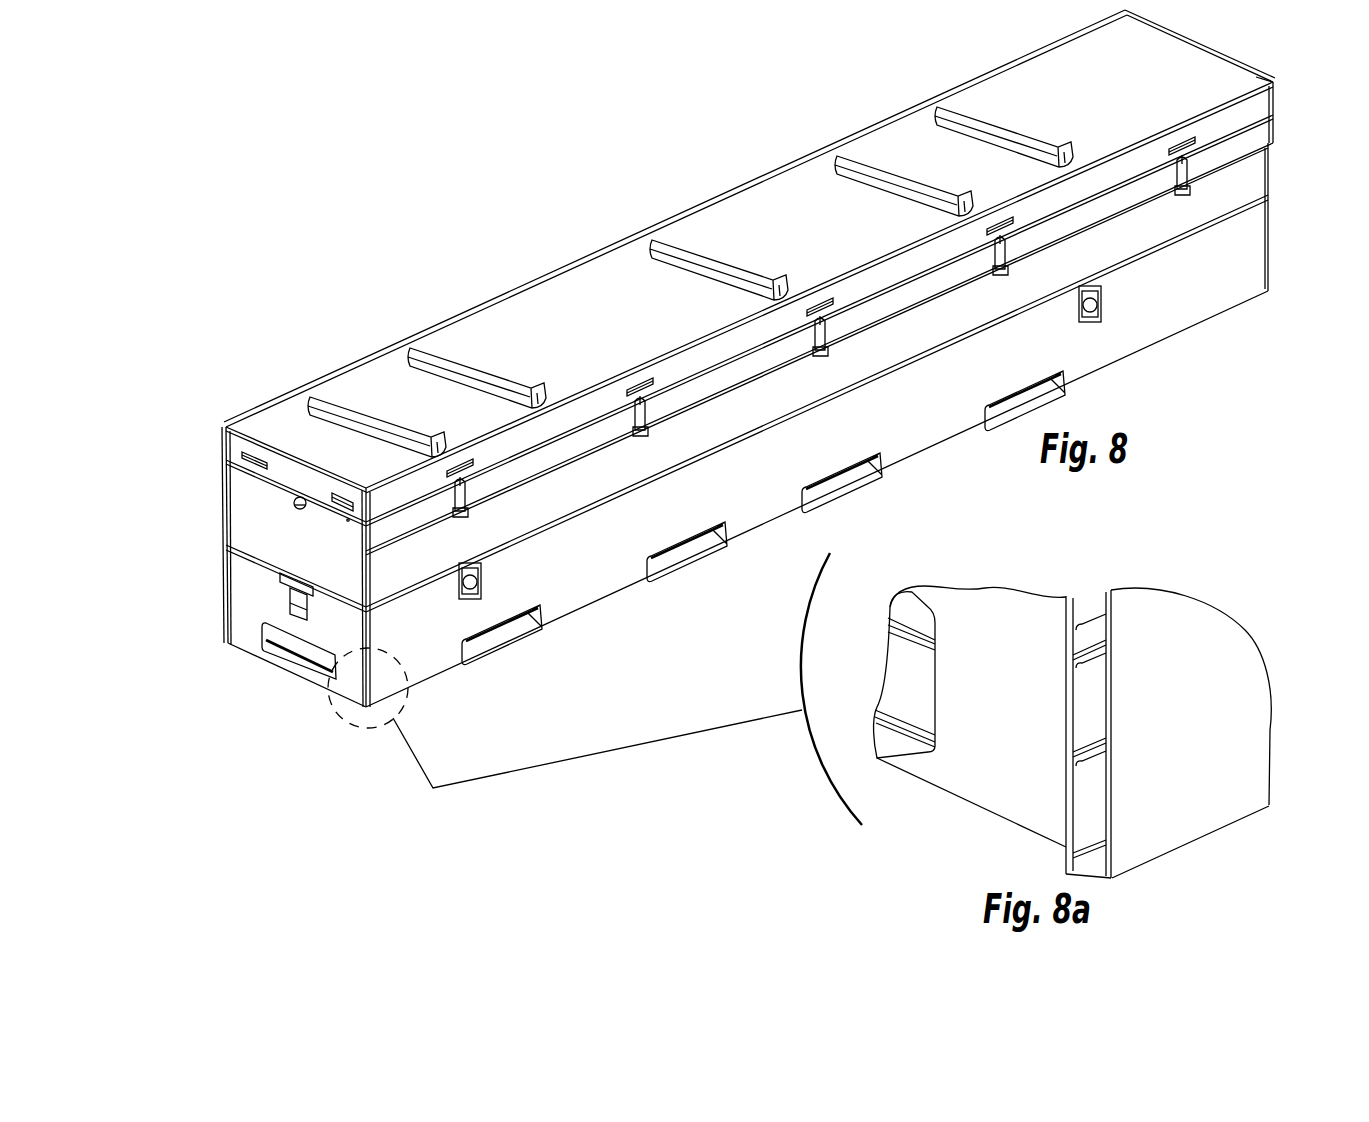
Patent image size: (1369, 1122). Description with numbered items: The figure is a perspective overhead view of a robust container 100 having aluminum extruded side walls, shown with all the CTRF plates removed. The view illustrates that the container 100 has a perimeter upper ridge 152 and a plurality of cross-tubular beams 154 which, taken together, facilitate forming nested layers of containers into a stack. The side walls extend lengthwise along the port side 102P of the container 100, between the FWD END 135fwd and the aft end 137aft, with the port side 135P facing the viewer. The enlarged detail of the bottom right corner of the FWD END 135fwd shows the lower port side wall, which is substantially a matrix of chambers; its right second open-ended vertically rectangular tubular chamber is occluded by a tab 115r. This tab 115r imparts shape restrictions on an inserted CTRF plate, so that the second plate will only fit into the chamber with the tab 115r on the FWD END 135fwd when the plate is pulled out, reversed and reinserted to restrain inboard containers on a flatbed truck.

In FIG. 8, the container 100 is at (385, 184).
In FIG. 8, the perimeter upper ridge 152 is at (314, 381).
In FIG. 8, the cross-tubular beams 154 is at (378, 407).
In FIG. 8, the aft end wall 137aft is at (1281, 173).
In FIG. 8, the port side handles 135P is at (909, 432).
In FIG. 8, the FWD END 135fwd is at (263, 598).
In FIG. 8A, the FWD END 135fwd is at (963, 747).
In FIG. 8A, the port-side (lower port side wall) 102P is at (1167, 650).
In FIG. 8A, the tab 115r is at (1075, 712).